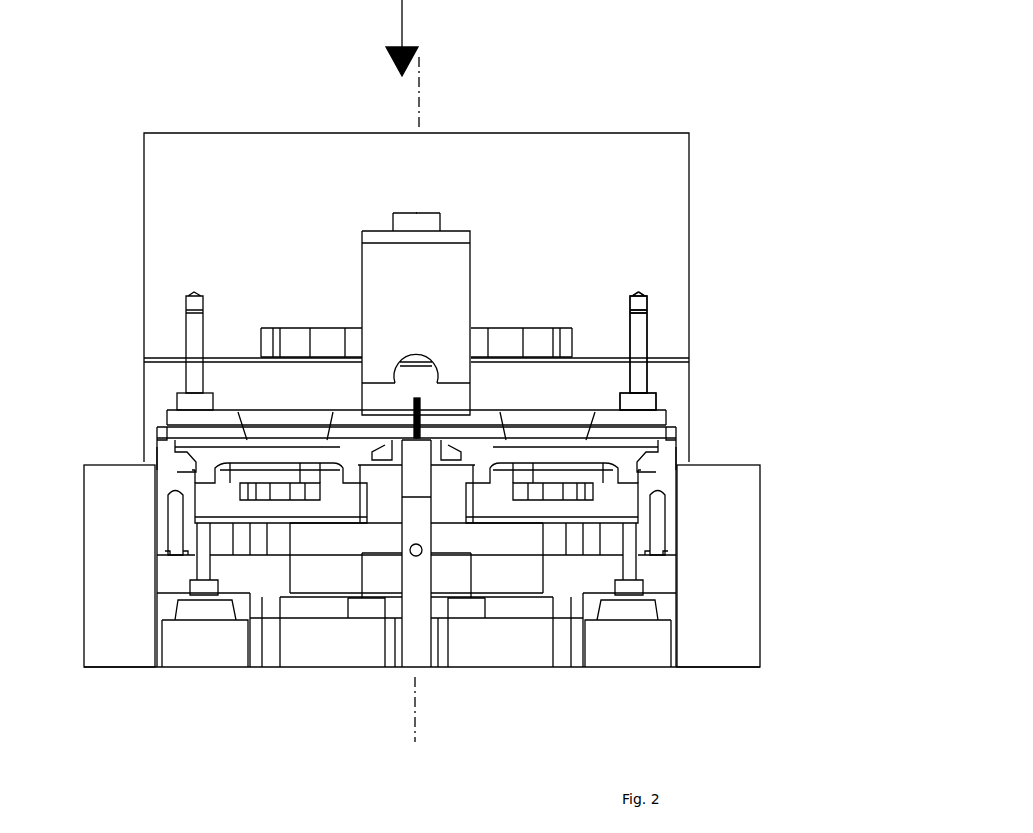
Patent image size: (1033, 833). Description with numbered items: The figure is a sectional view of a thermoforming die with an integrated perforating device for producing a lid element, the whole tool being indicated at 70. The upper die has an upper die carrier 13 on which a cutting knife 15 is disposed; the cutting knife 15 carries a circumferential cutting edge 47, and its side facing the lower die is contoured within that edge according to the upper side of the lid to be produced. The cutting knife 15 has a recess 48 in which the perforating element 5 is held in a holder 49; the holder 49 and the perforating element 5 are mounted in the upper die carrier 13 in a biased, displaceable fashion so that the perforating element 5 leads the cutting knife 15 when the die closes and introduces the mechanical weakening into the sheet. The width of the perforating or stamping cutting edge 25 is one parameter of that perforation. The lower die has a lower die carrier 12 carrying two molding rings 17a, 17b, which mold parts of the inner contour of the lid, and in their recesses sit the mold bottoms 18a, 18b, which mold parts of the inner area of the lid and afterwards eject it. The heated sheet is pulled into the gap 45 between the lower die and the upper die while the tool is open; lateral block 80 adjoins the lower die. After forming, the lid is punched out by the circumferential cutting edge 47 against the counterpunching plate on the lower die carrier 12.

The mold tool 70 is at (562, 110).
The upper die carrier 13 is at (634, 212).
The holder 49 is at (405, 290).
The recess 48 is at (355, 375).
The circumferential cutting edge 47 is at (148, 460).
The perforating element 5 is at (420, 422).
The cutting knife 15 is at (665, 385).
The mold bottom 18b is at (605, 435).
The gap 45 is at (692, 460).
The lower die carrier 12 is at (122, 625).
The molding ring 17a is at (163, 503).
The mold bottom 18a is at (282, 452).
The width of the perforating or stamping cutting edge 25 is at (423, 448).
The molding ring 17b is at (655, 480).
The right lower block 80 is at (711, 690).